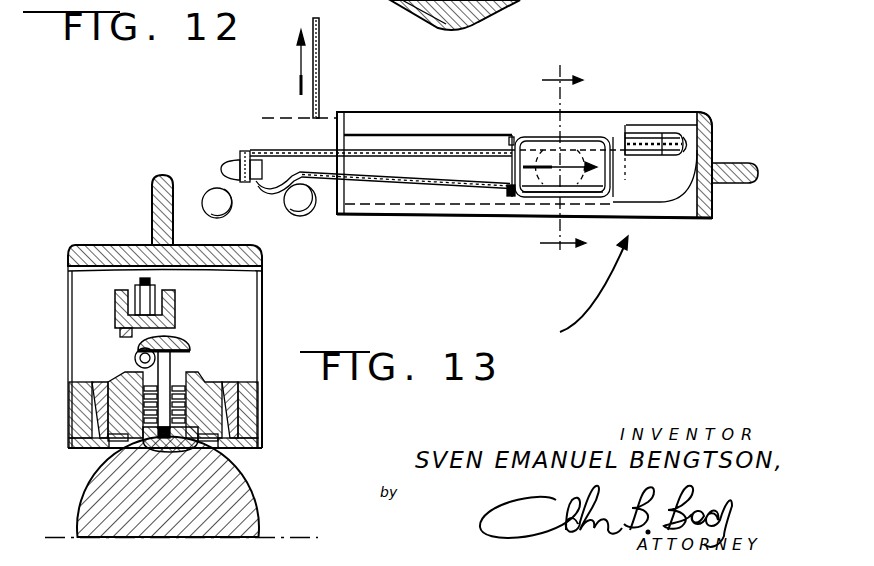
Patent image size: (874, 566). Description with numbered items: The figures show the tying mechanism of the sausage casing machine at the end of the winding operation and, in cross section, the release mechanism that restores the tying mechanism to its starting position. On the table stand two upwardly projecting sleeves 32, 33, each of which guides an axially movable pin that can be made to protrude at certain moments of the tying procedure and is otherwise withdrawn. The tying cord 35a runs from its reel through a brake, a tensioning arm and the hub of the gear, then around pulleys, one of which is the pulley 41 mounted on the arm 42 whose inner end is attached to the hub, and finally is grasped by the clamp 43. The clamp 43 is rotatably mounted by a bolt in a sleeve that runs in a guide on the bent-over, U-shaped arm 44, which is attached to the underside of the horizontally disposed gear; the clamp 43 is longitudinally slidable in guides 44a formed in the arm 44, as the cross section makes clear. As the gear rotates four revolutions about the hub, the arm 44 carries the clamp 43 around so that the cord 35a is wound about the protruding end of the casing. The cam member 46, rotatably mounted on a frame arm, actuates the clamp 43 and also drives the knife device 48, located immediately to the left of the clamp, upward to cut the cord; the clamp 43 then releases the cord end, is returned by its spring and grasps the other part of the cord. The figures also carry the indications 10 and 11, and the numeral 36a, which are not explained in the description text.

In FIG. 12, the plug connector 10 is at (241, 158).
In FIG. 12, the section line 11 is at (563, 158).
In FIG. 12, the sleeve 32 is at (222, 210).
In FIG. 12, the sleeve 33 is at (305, 211).
In FIG. 12, the tying cord 35a is at (322, 69).
In FIG. 13, the tying cord 35a is at (140, 281).
In FIG. 12, the cable 36a is at (290, 146).
In FIG. 12, the pulley 41 is at (672, 156).
In FIG. 13, the pulley 41 is at (150, 300).
In FIG. 12, the arm 42 is at (643, 132).
In FIG. 13, the arm 42 is at (175, 307).
In FIG. 12, the clamp 43 is at (532, 197).
In FIG. 13, the clamp 43 is at (204, 368).
In FIG. 12, the bent-over arm 44 is at (713, 131).
In FIG. 13, the bent-over arm 44 is at (118, 247).
In FIG. 12, the guides 44a is at (440, 204).
In FIG. 13, the guides 44a is at (262, 407).
In FIG. 13, the cam member 46 is at (224, 500).
In FIG. 12, the knife device 48 is at (503, 163).